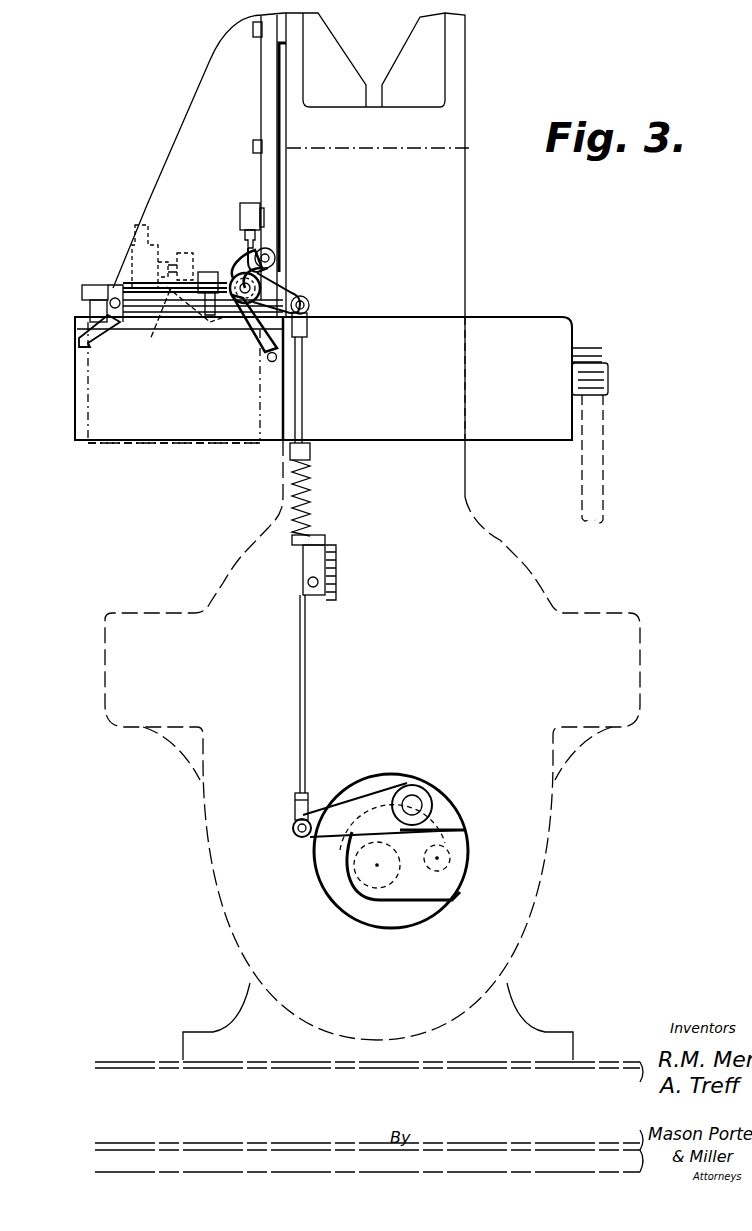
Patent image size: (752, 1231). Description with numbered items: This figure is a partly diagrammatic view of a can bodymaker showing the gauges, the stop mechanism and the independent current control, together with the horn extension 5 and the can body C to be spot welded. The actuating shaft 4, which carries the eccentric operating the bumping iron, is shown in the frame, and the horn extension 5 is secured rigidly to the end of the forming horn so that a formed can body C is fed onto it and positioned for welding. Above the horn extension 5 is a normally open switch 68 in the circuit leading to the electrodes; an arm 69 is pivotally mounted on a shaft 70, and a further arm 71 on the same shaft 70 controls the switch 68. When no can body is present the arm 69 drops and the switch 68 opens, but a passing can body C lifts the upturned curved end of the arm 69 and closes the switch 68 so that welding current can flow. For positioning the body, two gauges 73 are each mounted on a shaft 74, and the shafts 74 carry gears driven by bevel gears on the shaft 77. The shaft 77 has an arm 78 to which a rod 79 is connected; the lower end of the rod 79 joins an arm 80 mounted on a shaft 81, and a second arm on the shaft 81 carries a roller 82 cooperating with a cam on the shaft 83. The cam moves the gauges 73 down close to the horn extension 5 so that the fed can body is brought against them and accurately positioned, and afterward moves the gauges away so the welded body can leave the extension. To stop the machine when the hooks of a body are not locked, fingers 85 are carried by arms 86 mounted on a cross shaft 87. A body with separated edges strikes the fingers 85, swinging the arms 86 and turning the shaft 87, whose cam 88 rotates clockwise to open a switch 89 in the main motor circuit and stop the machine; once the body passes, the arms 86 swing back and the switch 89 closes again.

The actuating shaft 4 is at (445, 420).
The horn extension 5 is at (197, 430).
The can body C is at (127, 445).
The switch 68 is at (133, 250).
The arm 69 is at (170, 300).
The shaft 70 is at (157, 337).
The arm 71 is at (170, 268).
The gauge 73 is at (80, 335).
The shaft 74 is at (130, 308).
The shaft 77 is at (283, 273).
The arm 78 is at (270, 295).
The rod 79 is at (305, 383).
The arm 80 is at (328, 813).
The shaft 81 is at (413, 807).
The roller 82 is at (450, 858).
The shaft 83 is at (372, 875).
The finger 85 is at (267, 360).
The arm 86 is at (248, 323).
The cross shaft 87 is at (252, 252).
The cam 88 is at (256, 258).
The switch 89 is at (243, 213).